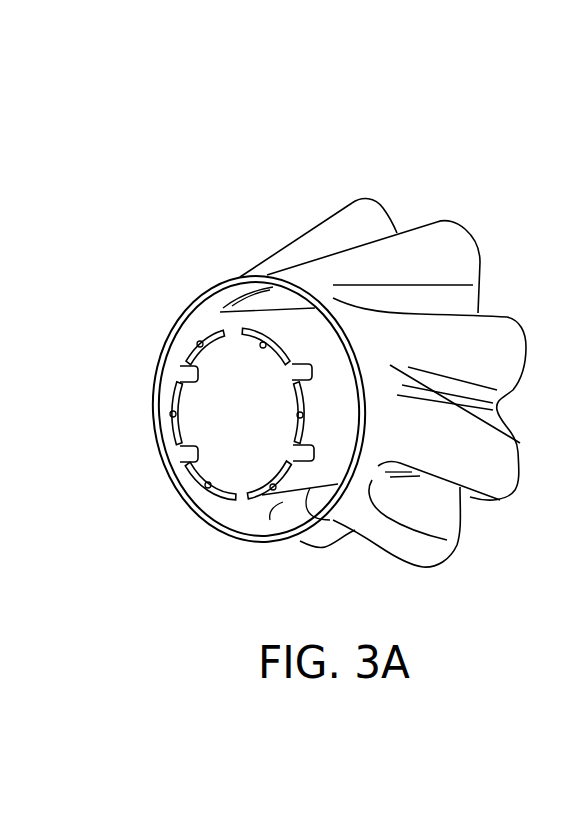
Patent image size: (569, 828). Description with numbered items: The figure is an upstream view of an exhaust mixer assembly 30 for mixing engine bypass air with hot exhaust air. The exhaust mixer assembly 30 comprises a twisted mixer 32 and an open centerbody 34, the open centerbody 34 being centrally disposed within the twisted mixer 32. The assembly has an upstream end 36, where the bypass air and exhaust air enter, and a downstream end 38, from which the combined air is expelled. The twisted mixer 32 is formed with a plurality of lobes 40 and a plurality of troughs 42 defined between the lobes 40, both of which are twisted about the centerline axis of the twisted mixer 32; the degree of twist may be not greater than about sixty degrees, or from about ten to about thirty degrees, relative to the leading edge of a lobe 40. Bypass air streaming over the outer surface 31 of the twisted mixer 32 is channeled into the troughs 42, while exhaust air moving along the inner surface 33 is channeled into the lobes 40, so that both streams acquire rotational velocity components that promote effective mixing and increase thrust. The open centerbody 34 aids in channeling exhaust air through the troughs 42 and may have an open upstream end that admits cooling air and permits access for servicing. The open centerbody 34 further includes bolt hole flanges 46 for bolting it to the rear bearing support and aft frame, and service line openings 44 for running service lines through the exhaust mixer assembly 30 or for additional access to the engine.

The exhaust mixer assembly 30 is at (232, 205).
The outer surface 31 is at (341, 212).
The twisted mixer 32 is at (378, 547).
The inner surface 33 is at (235, 517).
The open centerbody 34 is at (207, 402).
The upstream end 36 is at (180, 498).
The downstream end 38 is at (517, 483).
The lobes 40 is at (444, 236).
The troughs 42 is at (467, 302).
The service line openings 44 is at (180, 458).
The bolt hole flanges 46 is at (273, 489).